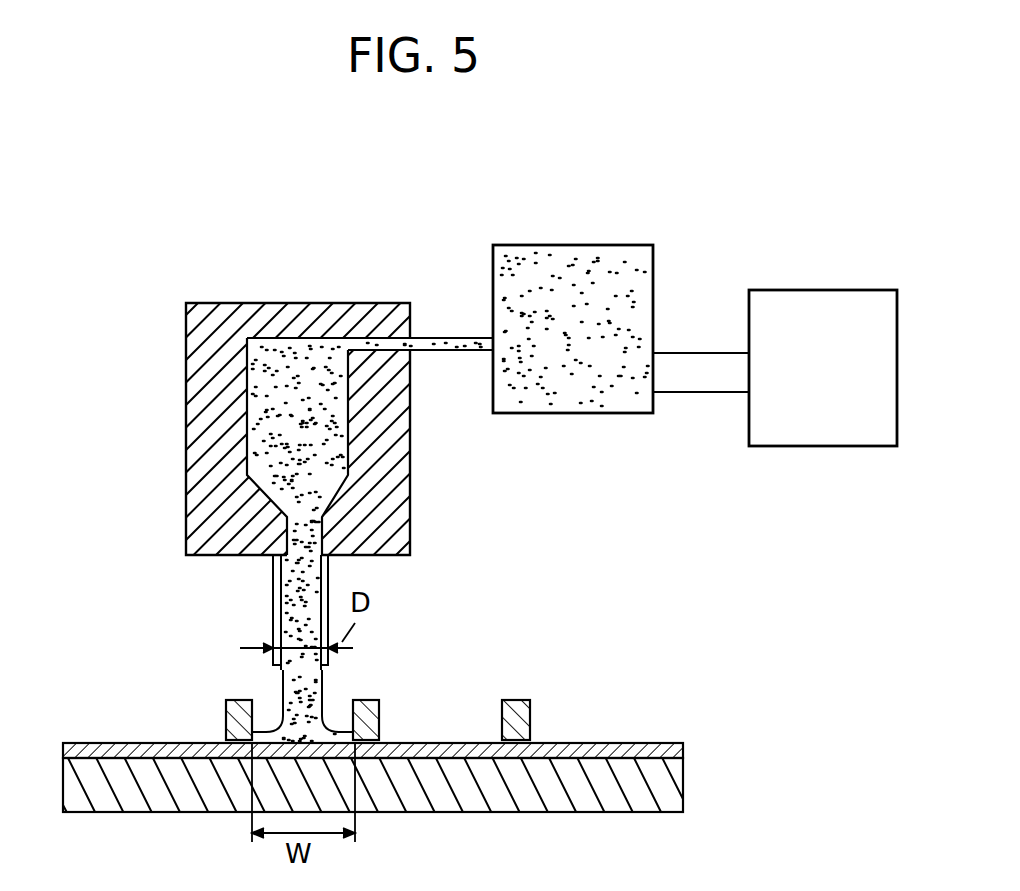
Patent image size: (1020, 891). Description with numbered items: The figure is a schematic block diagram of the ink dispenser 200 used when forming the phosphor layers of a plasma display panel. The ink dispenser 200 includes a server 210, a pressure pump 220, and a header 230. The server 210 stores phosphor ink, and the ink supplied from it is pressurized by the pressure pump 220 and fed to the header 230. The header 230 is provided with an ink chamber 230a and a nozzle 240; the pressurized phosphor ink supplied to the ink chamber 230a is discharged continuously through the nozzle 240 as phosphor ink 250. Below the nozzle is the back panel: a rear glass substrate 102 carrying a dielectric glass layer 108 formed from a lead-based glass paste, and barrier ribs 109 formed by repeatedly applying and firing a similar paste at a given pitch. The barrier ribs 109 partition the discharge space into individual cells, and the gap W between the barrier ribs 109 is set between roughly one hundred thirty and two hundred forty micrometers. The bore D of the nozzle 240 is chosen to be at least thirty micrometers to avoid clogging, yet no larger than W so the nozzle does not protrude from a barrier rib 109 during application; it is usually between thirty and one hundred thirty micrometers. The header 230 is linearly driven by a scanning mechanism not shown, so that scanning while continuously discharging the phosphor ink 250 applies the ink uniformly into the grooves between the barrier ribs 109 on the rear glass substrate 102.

The ink dispenser 200 is at (410, 278).
The server 210 is at (825, 446).
The pressure pump 220 is at (587, 413).
The header 230 is at (410, 525).
The ink chamber 230a is at (260, 417).
The nozzle 240 is at (272, 617).
The phosphor ink 250 is at (323, 705).
The barrier rib 109 is at (222, 704).
The dielectric glass layer 108 is at (683, 753).
The rear glass substrate 102 is at (682, 780).